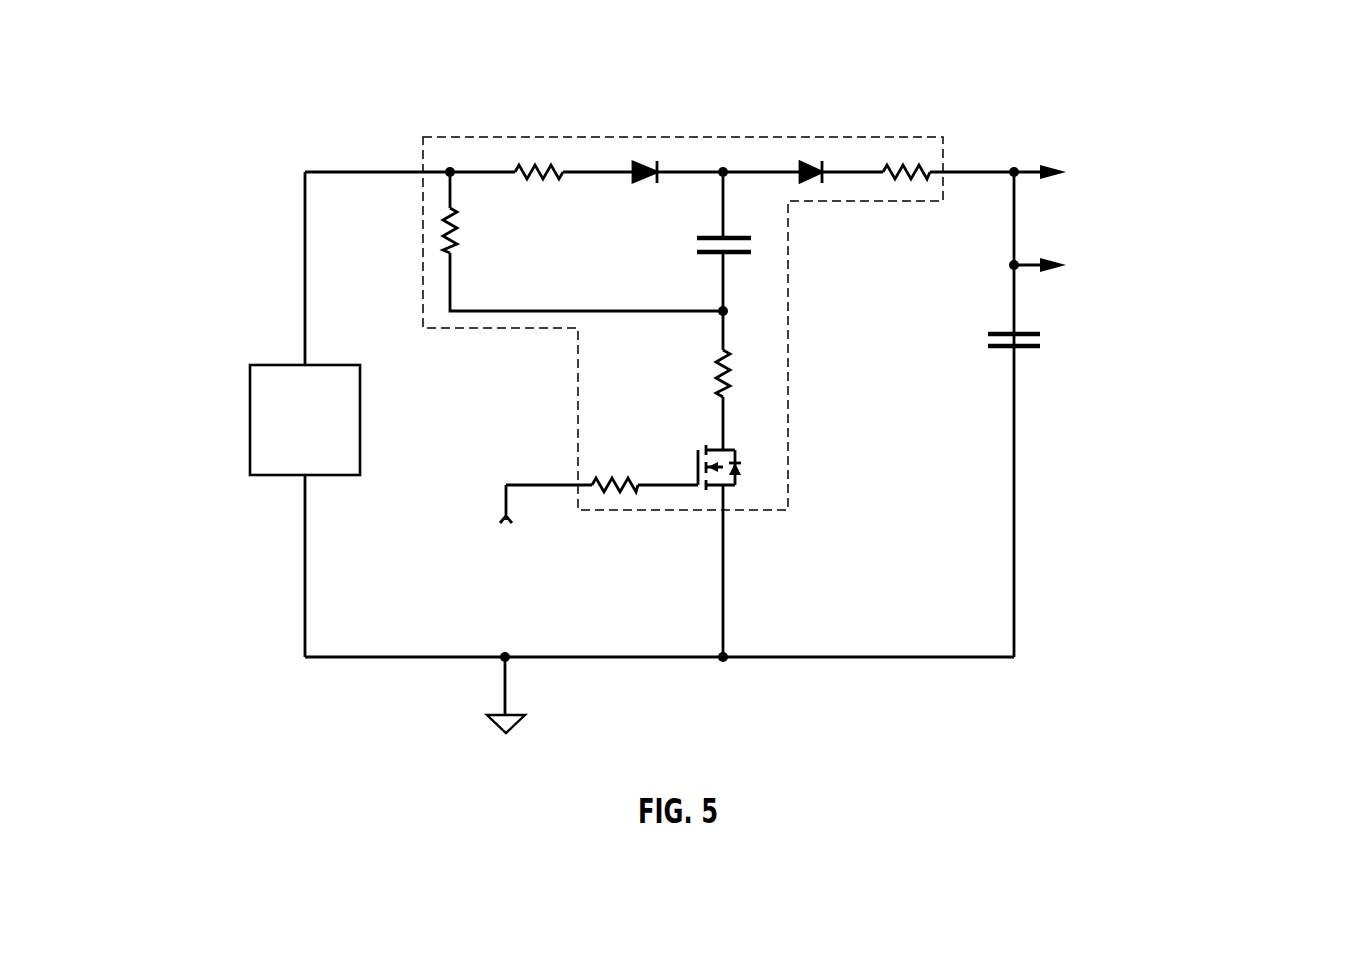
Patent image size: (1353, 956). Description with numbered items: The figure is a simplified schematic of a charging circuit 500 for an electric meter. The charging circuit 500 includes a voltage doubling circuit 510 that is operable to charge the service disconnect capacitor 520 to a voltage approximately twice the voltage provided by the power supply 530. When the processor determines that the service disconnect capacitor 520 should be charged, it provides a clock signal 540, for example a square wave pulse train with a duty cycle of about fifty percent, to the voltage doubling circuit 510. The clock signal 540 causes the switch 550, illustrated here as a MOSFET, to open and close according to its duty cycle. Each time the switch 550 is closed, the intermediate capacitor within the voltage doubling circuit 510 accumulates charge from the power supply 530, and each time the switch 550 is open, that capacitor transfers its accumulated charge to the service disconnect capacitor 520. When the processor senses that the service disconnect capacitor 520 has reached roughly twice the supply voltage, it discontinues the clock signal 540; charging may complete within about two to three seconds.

The charging circuit 500 is at (226, 88).
The voltage doubling circuit 510 is at (778, 137).
The service disconnect capacitor 520 is at (993, 368).
The power supply 530 is at (322, 459).
The clock signal 540 is at (505, 503).
The switch 550 is at (706, 504).